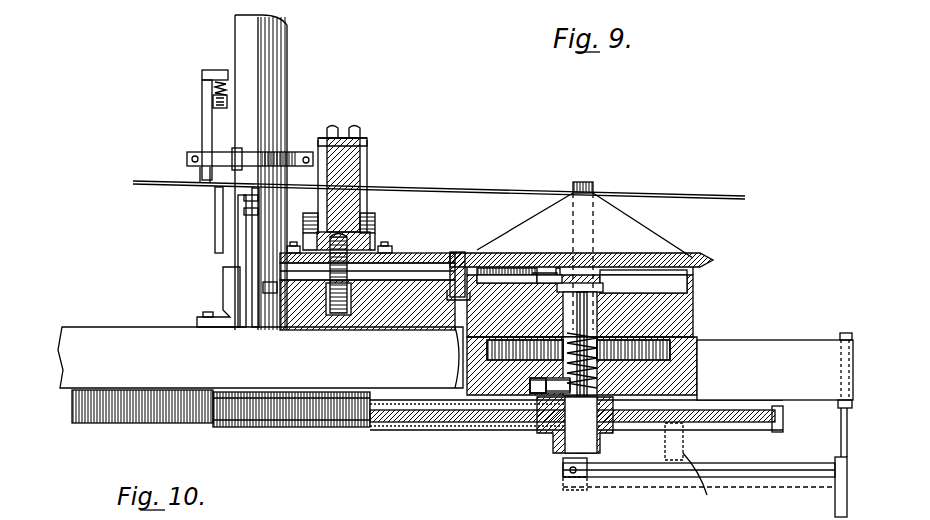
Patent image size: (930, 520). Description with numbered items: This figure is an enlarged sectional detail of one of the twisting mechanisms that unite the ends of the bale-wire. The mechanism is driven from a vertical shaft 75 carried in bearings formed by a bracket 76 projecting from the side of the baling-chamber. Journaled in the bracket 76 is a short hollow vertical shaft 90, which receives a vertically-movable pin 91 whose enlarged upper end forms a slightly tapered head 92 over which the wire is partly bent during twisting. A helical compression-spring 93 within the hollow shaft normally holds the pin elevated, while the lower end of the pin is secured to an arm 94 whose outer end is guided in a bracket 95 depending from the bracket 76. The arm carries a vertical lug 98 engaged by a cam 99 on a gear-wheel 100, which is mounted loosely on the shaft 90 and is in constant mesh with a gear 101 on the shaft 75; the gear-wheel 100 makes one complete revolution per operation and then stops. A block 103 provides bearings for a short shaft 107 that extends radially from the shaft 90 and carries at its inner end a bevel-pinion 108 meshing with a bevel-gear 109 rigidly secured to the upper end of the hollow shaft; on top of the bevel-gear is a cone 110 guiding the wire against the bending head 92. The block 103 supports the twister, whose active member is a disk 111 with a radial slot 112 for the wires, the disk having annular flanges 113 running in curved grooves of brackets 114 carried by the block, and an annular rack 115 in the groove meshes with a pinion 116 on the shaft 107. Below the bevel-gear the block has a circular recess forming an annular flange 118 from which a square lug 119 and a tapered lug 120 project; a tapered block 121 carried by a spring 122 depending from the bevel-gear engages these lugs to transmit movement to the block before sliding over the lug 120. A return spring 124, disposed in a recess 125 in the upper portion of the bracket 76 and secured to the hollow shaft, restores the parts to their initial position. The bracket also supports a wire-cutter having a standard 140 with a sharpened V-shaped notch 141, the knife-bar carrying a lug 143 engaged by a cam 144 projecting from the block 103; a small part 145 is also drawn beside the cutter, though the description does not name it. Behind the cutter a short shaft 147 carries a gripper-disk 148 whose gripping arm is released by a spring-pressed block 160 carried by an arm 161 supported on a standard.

The vertical shaft 75 is at (284, 64).
The bracket 76 is at (260, 357).
The hollow vertical shaft 90 is at (560, 446).
The vertically-movable pin 91 is at (565, 464).
The tapered head 92 is at (590, 182).
The helical compression-spring 93 is at (560, 335).
The arm 94 is at (712, 468).
The bracket 95 is at (836, 505).
The vertical lug 98 is at (700, 481).
The cam 99 is at (665, 437).
The gear-wheel 100 is at (492, 422).
The gear 101 is at (148, 410).
The block 103 is at (695, 316).
The short shaft 107 is at (411, 275).
The bevel-pinion 108 is at (450, 318).
The bevel-gear 109 is at (712, 259).
The cone 110 is at (642, 238).
The disk 111 is at (354, 129).
The radial slot 112 is at (368, 174).
The annular flanges 113 is at (368, 141).
The brackets 114 is at (366, 223).
The annular rack 115 is at (333, 128).
The pinion 116 is at (338, 314).
The annular flange 118 is at (695, 284).
The lug 119 is at (536, 273).
The lug 120 is at (653, 281).
The tapered block 121 is at (559, 270).
The spring 122 is at (516, 386).
The spring 124 is at (683, 362).
The recess 125 is at (690, 355).
The standard 140 is at (249, 212).
The V-shaped notch 141 is at (251, 199).
The projecting lug 143 is at (262, 292).
The cam 144 is at (277, 328).
The bracket 145 is at (228, 291).
The short shaft 147 is at (205, 186).
The gripper-disk 148 is at (215, 240).
The spring-pressed block 160 is at (213, 101).
The arm 161 is at (228, 75).